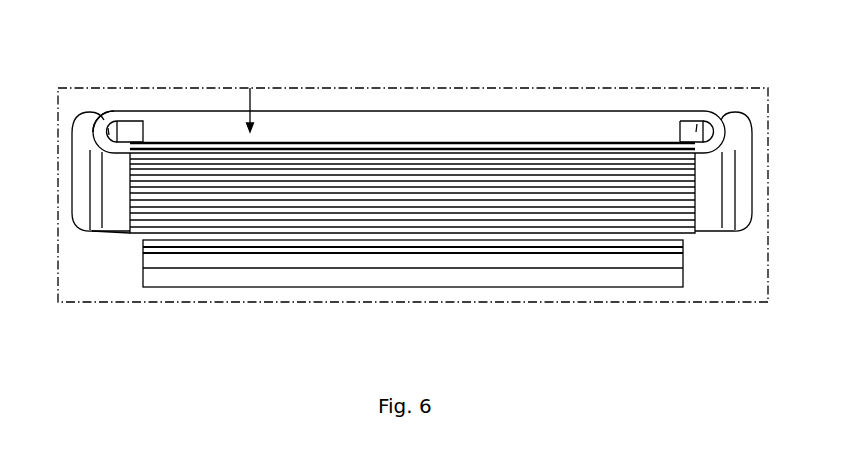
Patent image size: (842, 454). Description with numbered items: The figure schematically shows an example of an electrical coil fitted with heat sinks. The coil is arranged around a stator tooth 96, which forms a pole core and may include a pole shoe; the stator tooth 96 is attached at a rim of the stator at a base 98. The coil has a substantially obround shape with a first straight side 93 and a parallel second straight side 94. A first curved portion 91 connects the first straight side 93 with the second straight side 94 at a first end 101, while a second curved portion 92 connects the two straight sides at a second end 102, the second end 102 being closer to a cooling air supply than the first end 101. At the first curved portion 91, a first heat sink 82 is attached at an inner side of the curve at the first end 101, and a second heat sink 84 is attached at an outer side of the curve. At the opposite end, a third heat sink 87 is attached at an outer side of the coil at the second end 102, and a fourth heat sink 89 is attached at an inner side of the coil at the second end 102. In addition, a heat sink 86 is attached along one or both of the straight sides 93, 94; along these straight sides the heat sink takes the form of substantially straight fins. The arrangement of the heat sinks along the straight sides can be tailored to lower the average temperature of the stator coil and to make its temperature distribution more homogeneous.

The first heat sink 82 is at (737, 116).
The second heat sink 84 is at (698, 125).
The heat sink 86 is at (130, 213).
The third heat sink 87 is at (86, 116).
The fourth heat sink 89 is at (108, 118).
The first curved portion 91 is at (723, 120).
The second curved portion 92 is at (132, 111).
The first straight side 93 is at (597, 110).
The second straight side 94 is at (670, 147).
The stator tooth 96 is at (250, 88).
The base 98 is at (492, 272).
The first end 101 is at (780, 175).
The second end 102 is at (44, 175).